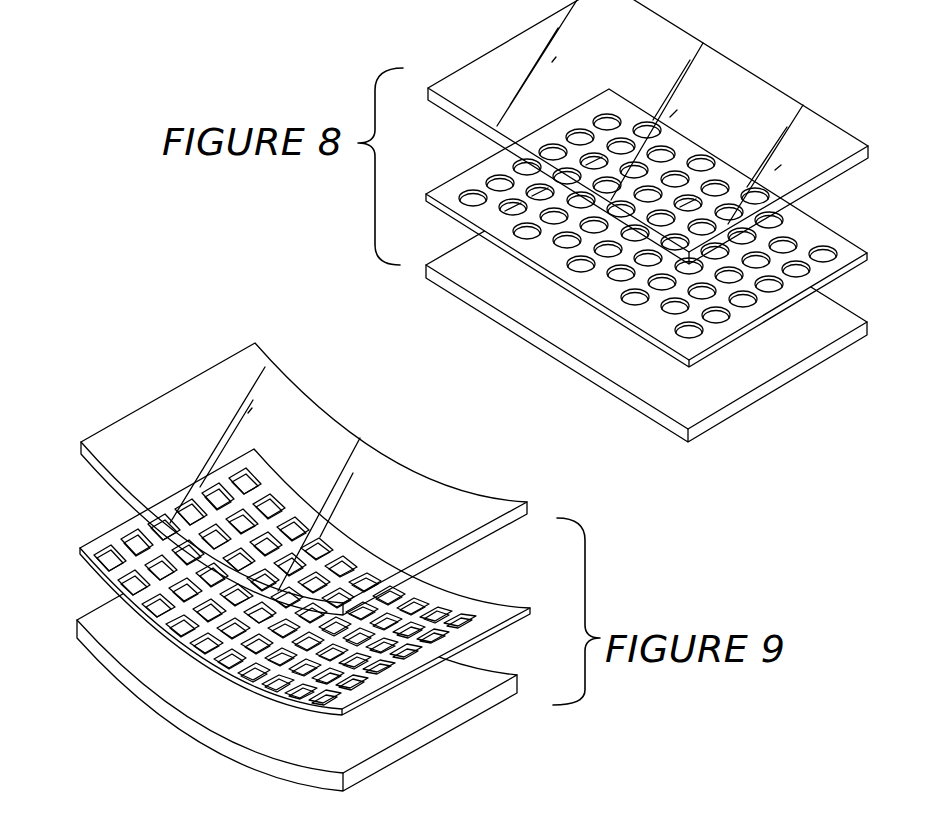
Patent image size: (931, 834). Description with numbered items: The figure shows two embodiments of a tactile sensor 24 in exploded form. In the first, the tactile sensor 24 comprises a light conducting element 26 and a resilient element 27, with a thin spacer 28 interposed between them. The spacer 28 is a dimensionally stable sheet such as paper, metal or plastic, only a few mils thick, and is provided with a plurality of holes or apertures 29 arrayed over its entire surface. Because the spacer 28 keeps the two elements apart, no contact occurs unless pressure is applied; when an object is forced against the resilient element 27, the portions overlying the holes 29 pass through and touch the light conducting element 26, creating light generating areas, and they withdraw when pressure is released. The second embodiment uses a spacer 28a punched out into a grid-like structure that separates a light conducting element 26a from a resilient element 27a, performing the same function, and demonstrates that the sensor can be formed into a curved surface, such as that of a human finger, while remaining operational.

In FIG. 8, the tactile sensor 24 is at (338, 182).
In FIG. 8, the light conducting element 26 is at (726, 54).
In FIG. 8, the resilient element 27 is at (567, 357).
In FIG. 8, the spacer 28 is at (646, 229).
In FIG. 8, the holes or apertures 29 is at (784, 267).
In FIG. 9, the light conducting element 26a is at (455, 492).
In FIG. 9, the resilient element 27a is at (447, 722).
In FIG. 9, the spacer 28a is at (487, 603).